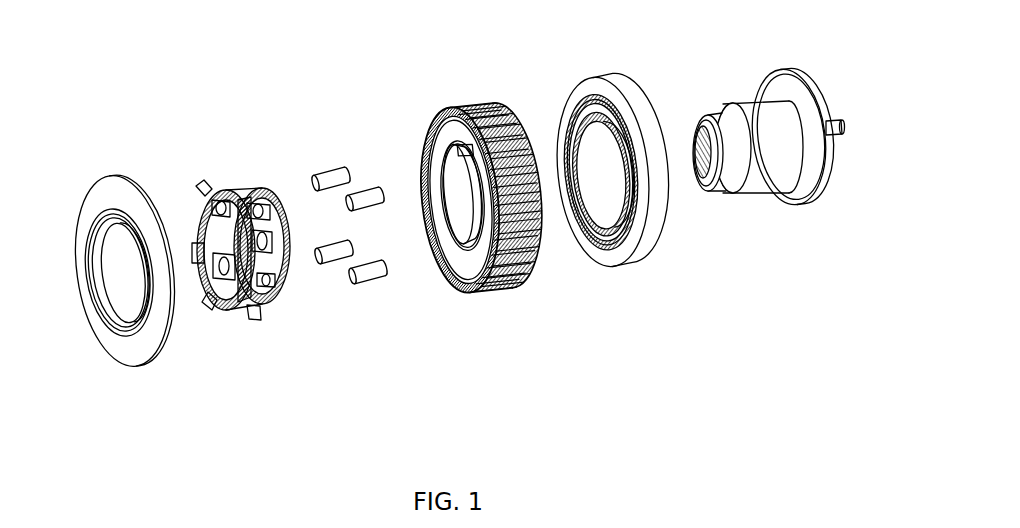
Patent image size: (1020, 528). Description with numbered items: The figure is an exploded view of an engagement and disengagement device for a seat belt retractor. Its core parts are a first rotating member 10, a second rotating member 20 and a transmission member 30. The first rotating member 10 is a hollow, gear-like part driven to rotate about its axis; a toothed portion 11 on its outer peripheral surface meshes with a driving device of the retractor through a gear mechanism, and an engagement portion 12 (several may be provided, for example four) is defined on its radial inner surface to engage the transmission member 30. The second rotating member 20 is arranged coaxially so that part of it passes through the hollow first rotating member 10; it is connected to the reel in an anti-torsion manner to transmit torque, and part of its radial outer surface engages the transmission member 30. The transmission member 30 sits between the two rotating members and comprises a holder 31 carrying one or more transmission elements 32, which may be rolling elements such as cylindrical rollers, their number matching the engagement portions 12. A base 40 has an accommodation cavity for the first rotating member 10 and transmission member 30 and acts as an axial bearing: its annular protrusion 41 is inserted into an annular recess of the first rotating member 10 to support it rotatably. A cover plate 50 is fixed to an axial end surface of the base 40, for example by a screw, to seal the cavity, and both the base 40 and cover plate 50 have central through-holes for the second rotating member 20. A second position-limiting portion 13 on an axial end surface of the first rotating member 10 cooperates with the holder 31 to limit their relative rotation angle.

The first rotating member 10 is at (439, 207).
The toothed portion 11 is at (487, 108).
The engagement portion 12 is at (435, 117).
The second position-limiting portion 13 is at (421, 143).
The second rotating member 20 is at (767, 170).
The transmission member 30 is at (306, 297).
The holder 31 is at (253, 303).
The transmission element 32 is at (370, 278).
The base 40 is at (611, 210).
The annular protrusion 41 is at (602, 92).
The cover plate 50 is at (135, 355).